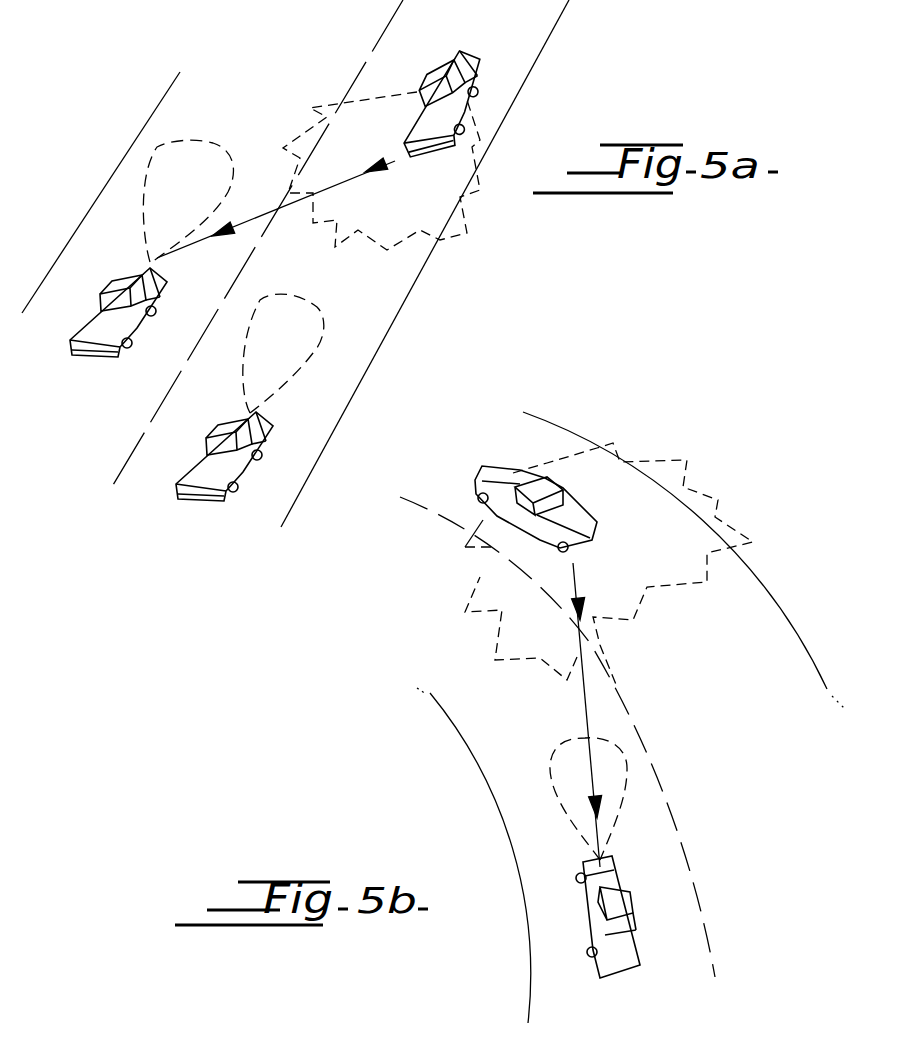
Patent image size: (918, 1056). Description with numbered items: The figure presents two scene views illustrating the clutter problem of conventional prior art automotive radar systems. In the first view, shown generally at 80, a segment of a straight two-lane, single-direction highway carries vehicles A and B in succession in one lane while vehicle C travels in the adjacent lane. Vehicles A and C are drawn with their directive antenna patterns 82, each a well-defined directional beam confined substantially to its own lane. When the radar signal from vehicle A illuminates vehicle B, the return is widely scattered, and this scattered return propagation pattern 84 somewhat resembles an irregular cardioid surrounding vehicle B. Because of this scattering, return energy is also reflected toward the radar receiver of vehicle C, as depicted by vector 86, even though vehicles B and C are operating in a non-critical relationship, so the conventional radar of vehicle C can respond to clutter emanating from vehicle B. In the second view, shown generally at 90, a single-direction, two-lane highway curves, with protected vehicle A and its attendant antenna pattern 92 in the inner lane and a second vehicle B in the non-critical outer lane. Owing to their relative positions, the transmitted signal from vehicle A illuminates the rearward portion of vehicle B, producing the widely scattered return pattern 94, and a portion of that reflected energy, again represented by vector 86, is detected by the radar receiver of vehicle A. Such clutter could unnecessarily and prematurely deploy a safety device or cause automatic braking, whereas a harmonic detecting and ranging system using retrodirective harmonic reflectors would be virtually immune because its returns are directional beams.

In FIG. 5A, the scene view of a two-lane, single-direction highway segment 80 is at (77, 461).
In FIG. 5A, the directive antenna pattern 82 is at (181, 140).
In FIG. 5A, the scattered return propagation pattern 84 is at (357, 235).
In FIG. 5A, the vector 86 is at (250, 220).
In FIG. 5B, the vector 86 is at (583, 710).
In FIG. 5B, the segment of a single-direction, two-lane highway along a curved portion 90 is at (713, 1032).
In FIG. 5B, the antenna pattern 92 is at (627, 805).
In FIG. 5B, the widely scattered return signal pattern 94 is at (645, 598).
In FIG. 5A, the vehicle A is at (222, 507).
In FIG. 5B, the vehicle A is at (630, 918).
In FIG. 5A, the vehicle B is at (490, 65).
In FIG. 5B, the vehicle B is at (507, 467).
In FIG. 5A, the vehicle C is at (147, 327).